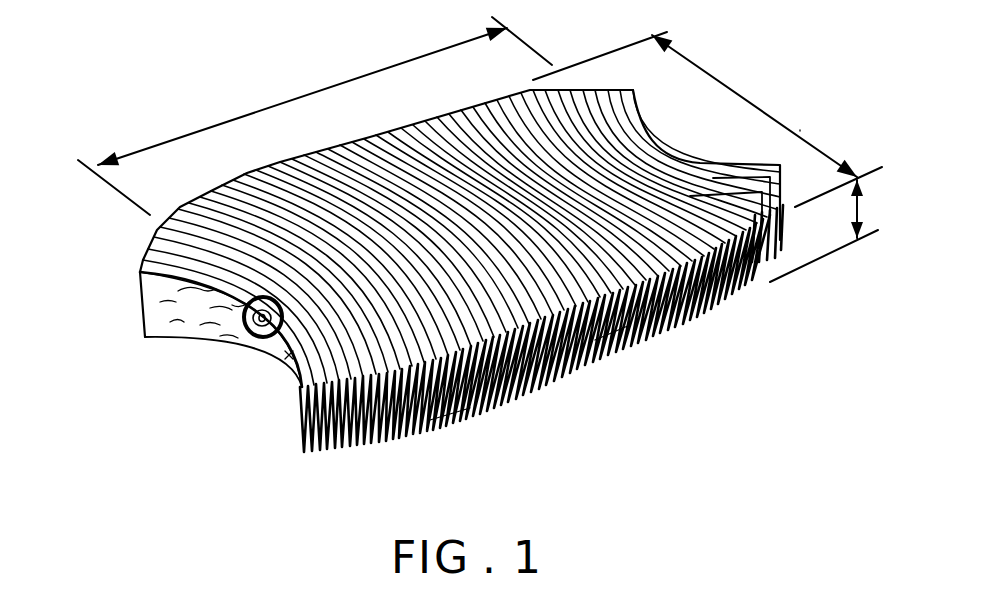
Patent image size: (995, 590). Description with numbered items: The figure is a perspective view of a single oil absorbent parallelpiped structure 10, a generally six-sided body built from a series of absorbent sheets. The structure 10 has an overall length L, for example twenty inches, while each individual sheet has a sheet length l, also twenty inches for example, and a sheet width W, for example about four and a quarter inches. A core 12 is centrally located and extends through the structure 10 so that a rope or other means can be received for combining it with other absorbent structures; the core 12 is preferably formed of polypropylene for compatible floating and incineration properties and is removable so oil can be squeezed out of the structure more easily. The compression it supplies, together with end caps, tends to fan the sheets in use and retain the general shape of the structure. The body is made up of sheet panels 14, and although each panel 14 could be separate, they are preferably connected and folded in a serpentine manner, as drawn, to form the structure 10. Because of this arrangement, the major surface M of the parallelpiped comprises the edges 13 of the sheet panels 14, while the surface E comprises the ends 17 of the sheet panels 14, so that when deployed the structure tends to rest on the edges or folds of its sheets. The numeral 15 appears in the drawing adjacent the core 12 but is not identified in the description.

The oil absorbent parallelpiped structure 10 is at (139, 92).
The core 12 is at (258, 320).
The edges 13 is at (708, 304).
The sheet panel 14 is at (147, 313).
The hanging hole 15 is at (273, 335).
The ends 17 is at (498, 390).
The overall length L is at (333, 90).
The individual sheet length l is at (723, 87).
The width dimension W is at (866, 204).
The major surface M is at (612, 345).
The surface E is at (447, 410).